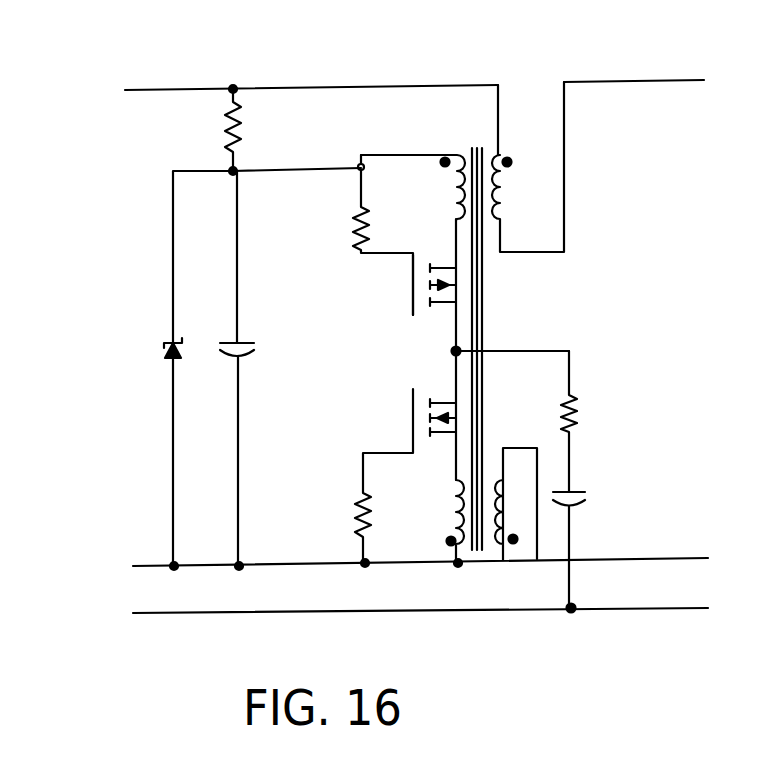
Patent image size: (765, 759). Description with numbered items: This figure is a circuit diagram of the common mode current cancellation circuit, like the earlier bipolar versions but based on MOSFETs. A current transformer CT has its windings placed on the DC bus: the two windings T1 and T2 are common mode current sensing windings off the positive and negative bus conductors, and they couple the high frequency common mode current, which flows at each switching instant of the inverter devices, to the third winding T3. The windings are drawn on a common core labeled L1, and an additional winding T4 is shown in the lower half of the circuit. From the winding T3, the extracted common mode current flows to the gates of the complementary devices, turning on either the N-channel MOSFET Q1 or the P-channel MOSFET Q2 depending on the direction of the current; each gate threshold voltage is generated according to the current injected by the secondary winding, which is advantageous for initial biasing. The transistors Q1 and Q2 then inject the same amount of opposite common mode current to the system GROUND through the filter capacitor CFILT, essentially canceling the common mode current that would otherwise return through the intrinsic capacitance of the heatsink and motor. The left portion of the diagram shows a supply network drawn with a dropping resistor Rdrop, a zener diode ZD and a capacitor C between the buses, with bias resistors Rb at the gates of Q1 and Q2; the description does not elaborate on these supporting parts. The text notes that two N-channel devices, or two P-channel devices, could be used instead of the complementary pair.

The ground GROUND is at (420, 630).
The dropping resistor Rdrop is at (271, 130).
The zener diode ZD is at (175, 370).
The capacitor C is at (251, 370).
The bias resistor Rb is at (383, 361).
The N-channel MOSFET Q1 is at (414, 285).
The P-channel MOSFET Q2 is at (414, 417).
The common mode current sensing winding T1 is at (528, 167).
The common mode current sensing winding T2 is at (516, 504).
The third winding T3 is at (413, 187).
The transformer winding T4 is at (444, 523).
The transformer core / inductor L1 is at (500, 349).
The current transformer CT is at (475, 101).
The filter capacitor CFILT is at (605, 549).